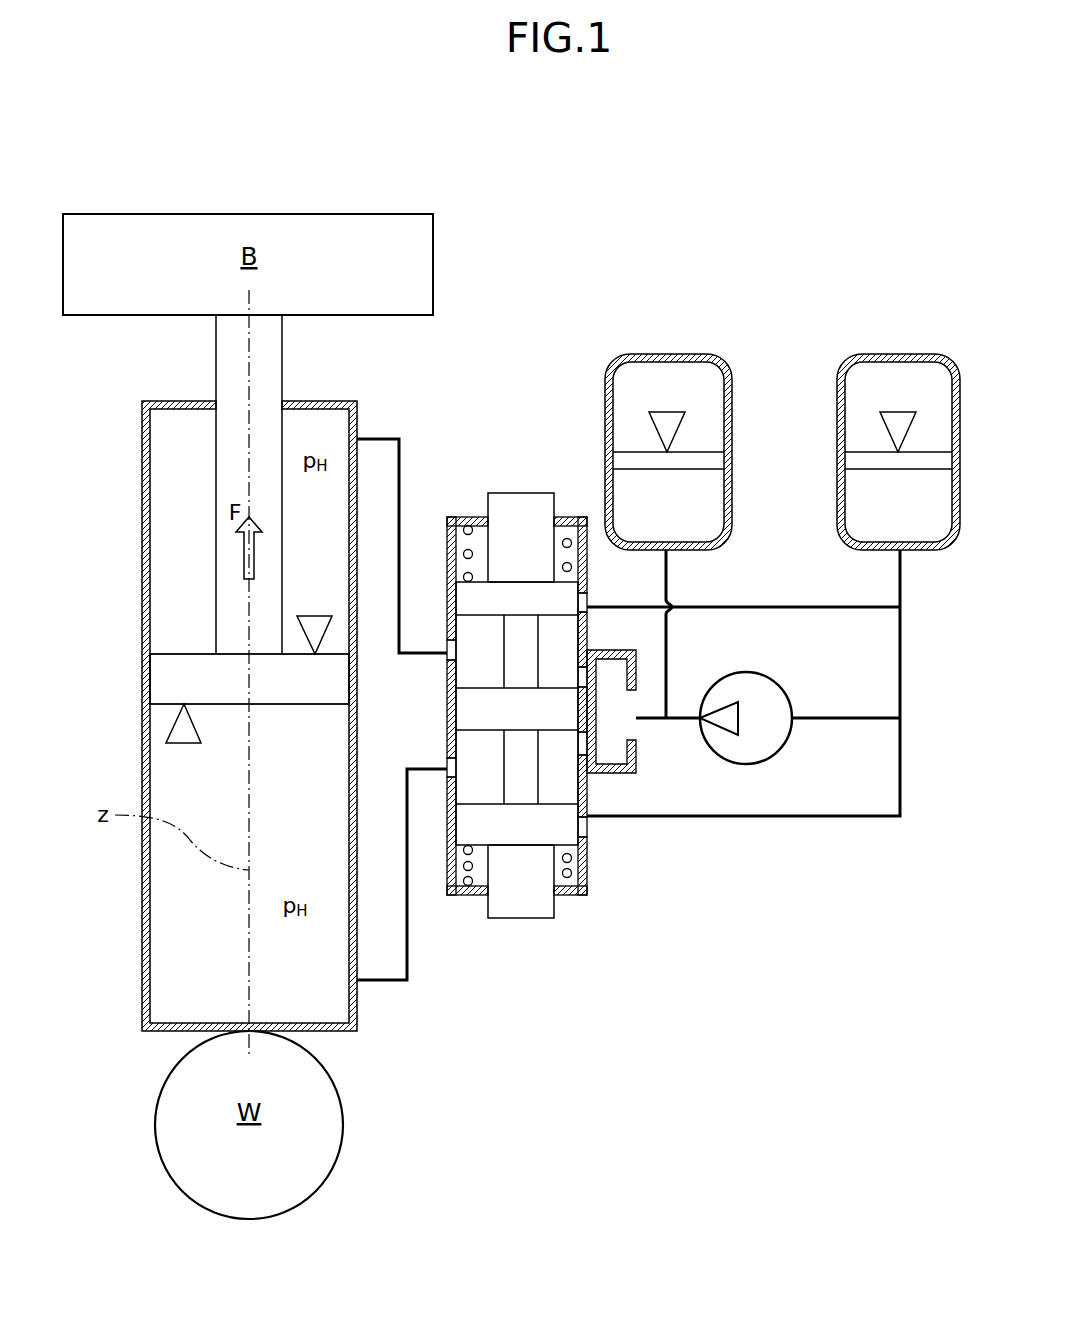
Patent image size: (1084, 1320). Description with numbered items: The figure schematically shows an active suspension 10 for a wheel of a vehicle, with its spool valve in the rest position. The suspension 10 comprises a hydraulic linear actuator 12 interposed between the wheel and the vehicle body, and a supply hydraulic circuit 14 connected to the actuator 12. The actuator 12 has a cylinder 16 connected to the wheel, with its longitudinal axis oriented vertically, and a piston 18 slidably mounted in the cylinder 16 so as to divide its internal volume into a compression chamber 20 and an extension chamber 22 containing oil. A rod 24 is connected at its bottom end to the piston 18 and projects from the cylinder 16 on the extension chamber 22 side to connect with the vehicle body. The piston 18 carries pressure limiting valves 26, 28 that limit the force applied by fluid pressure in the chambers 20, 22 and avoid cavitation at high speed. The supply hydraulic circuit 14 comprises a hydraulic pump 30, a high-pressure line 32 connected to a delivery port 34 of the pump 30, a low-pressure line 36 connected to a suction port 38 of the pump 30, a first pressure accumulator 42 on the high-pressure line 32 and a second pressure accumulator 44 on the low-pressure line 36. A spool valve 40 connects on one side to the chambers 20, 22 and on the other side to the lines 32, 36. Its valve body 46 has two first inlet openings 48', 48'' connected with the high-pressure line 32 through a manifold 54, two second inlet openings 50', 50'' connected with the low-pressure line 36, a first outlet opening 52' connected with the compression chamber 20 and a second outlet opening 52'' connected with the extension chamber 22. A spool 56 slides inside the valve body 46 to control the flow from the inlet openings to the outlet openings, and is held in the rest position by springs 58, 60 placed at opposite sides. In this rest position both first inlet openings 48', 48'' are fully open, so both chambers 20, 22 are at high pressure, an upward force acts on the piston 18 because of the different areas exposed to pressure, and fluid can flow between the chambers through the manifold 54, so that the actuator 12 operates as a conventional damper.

The active suspension 10 is at (636, 300).
The hydraulic linear actuator 12 is at (198, 716).
The supply hydraulic circuit 14 is at (756, 903).
The cylinder 16 is at (142, 745).
The piston 18 is at (290, 710).
The compression chamber 20 is at (178, 952).
The extension chamber 22 is at (178, 455).
The rod 24 is at (282, 367).
The pressure limiting valve 26 is at (315, 612).
The pressure limiting valve 28 is at (187, 745).
The hydraulic pump 30 is at (752, 672).
The high-pressure line 32 is at (682, 716).
The delivery port 34 is at (699, 721).
The low-pressure line 36 is at (860, 720).
The suction port 38 is at (794, 720).
The spool valve 40 is at (512, 717).
The first pressure accumulator 42 is at (697, 352).
The second pressure accumulator 44 is at (893, 352).
The valve body 46 is at (462, 517).
The first inlet opening 48' is at (619, 851).
The first inlet opening 48'' is at (522, 506).
The second inlet opening 50' is at (612, 930).
The second inlet opening 50'' is at (528, 502).
The first outlet opening 52' is at (418, 923).
The second outlet opening 52'' is at (409, 692).
The manifold 54 is at (601, 650).
The spool 56 is at (538, 762).
The spring 58 is at (471, 886).
The spring 60 is at (568, 538).